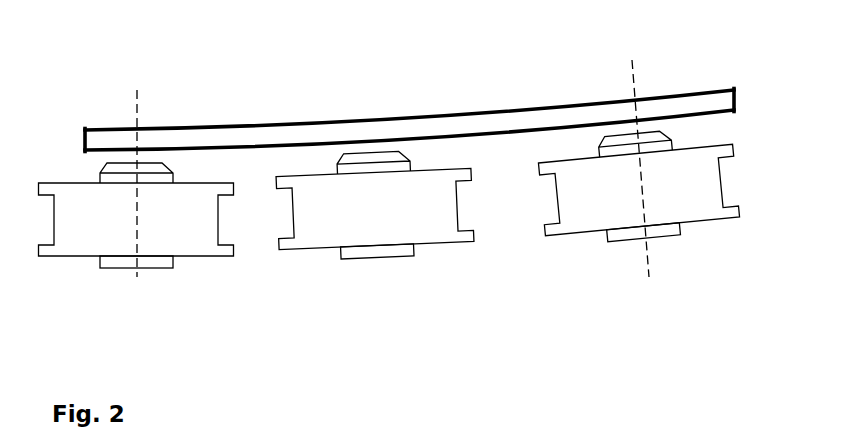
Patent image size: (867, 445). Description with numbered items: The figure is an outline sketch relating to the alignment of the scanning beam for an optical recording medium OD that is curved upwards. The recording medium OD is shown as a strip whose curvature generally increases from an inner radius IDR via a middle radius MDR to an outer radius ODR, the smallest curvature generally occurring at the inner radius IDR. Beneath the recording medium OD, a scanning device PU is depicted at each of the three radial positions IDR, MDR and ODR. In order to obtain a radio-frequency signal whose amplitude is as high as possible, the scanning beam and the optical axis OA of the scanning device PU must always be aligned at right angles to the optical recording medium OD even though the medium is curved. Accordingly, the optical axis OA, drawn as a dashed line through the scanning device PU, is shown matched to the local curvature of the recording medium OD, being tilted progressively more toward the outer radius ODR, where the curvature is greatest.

The optical recording medium OD is at (431, 119).
The optical axis OA is at (391, 146).
The scanning device PU is at (406, 216).
The inner radius IDR is at (136, 235).
The middle radius MDR is at (374, 228).
The outer radius ODR is at (639, 216).